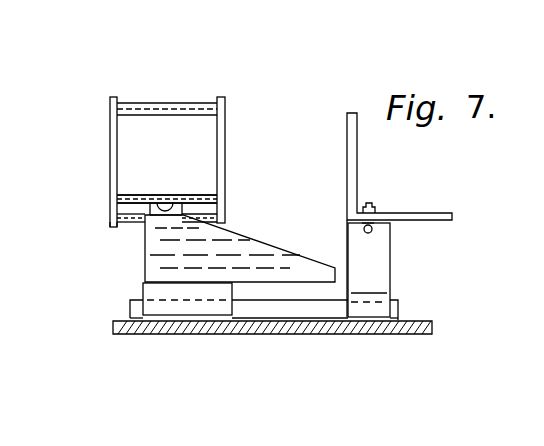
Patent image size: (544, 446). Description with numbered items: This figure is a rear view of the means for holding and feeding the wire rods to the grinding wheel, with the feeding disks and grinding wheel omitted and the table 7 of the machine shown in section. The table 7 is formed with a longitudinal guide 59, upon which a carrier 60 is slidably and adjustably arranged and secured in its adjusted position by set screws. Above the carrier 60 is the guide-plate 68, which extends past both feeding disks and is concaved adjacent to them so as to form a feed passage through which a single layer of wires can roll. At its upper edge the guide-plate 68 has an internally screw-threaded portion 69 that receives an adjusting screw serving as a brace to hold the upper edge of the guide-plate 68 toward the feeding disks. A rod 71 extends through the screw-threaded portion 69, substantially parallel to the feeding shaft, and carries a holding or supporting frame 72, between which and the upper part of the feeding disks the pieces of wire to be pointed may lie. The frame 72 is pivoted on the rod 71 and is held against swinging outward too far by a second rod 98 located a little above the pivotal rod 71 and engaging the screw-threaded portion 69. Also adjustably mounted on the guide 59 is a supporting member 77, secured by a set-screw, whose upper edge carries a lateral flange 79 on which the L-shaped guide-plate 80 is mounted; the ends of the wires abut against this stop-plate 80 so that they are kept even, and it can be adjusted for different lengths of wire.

The table 7 is at (378, 333).
The longitudinal guide 59 is at (272, 312).
The carrier 60 is at (160, 309).
The guide-plate 68 is at (250, 238).
The screw-threaded portion 69 is at (211, 206).
The rod 71 is at (127, 224).
The holding or supporting frame 72 is at (226, 121).
The supporting member 77 is at (369, 270).
The lateral flange 79 is at (384, 226).
The L-shaped guide-plate 80 is at (353, 181).
The second rod 98 is at (138, 194).